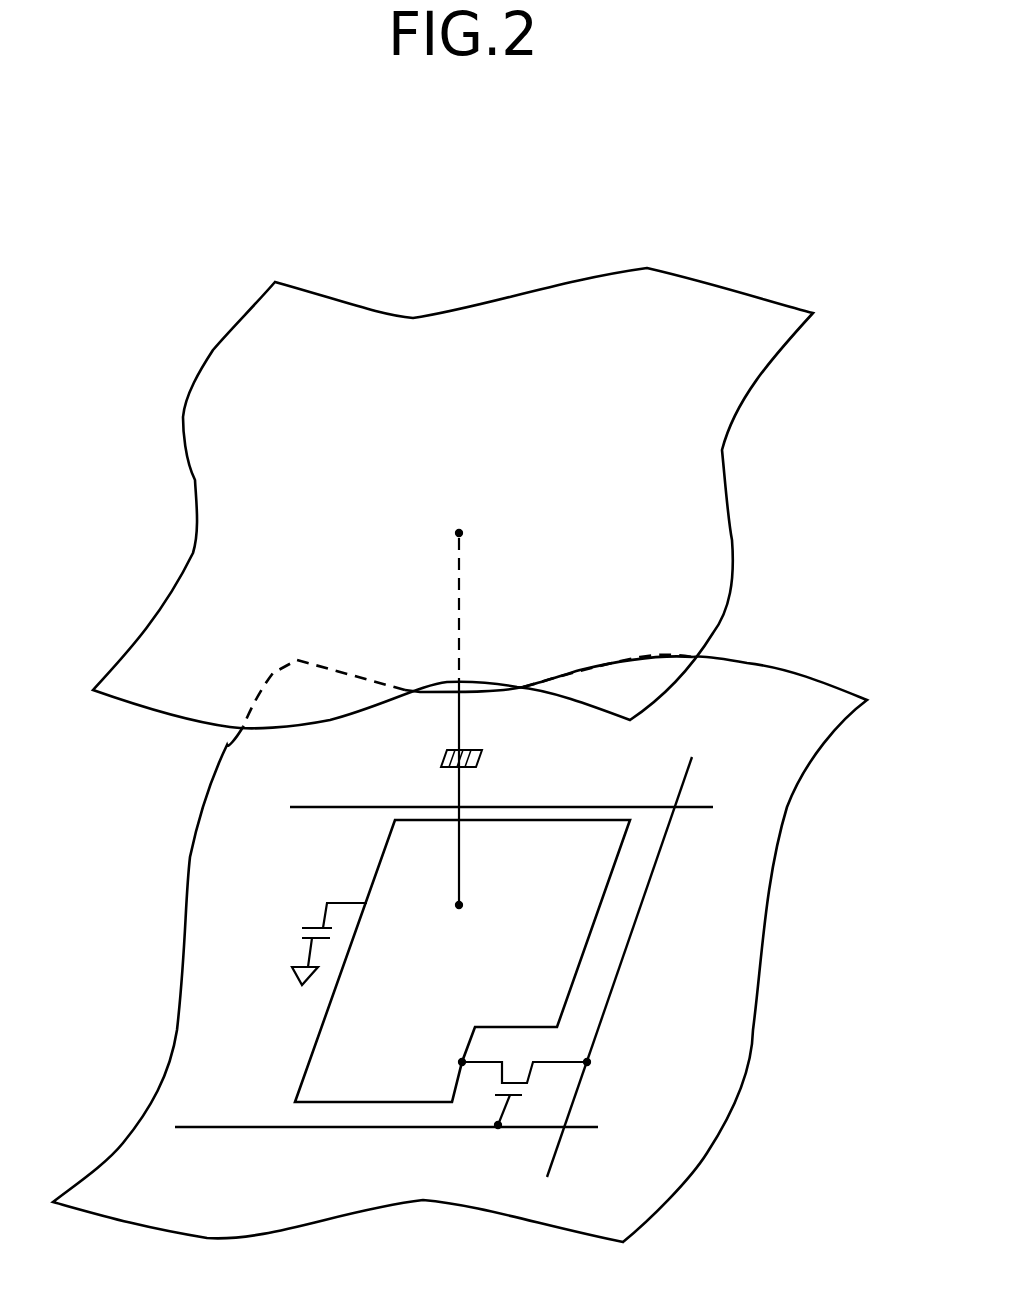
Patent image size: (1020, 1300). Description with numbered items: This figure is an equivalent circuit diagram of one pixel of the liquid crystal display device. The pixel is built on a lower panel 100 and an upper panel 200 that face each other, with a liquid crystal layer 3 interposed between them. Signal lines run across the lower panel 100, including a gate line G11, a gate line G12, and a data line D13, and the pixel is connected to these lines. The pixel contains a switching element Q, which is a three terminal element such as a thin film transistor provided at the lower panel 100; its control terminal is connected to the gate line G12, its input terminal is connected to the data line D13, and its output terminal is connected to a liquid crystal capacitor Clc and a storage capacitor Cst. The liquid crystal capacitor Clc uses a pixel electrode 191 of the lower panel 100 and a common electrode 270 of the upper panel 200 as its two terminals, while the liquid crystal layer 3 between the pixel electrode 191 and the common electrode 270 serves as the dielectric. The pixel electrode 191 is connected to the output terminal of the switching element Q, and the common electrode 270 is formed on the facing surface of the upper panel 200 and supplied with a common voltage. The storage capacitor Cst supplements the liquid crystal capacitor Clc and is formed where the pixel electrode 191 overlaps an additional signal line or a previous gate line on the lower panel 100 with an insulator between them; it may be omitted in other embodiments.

The liquid crystal layer 3 is at (105, 857).
The lower panel 100 is at (775, 945).
The upper panel 200 is at (469, 498).
The common electrode 270 is at (722, 452).
The pixel electrode 191 is at (316, 1042).
The liquid crystal capacitor Clc is at (487, 719).
The storage capacitor Cst is at (305, 944).
The switching element Q is at (525, 1094).
The gate line G11 is at (501, 787).
The gate line G12 is at (386, 1107).
The data line D13 is at (652, 961).